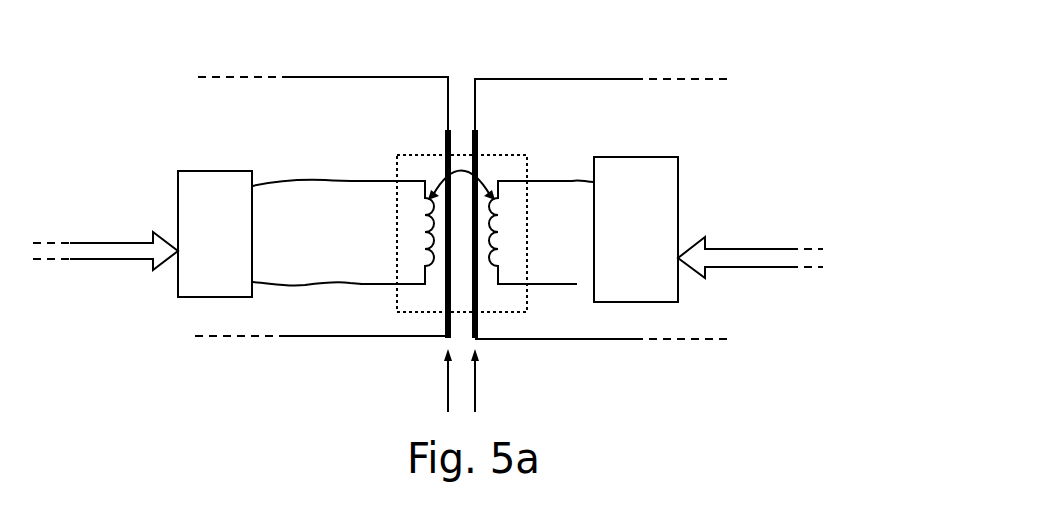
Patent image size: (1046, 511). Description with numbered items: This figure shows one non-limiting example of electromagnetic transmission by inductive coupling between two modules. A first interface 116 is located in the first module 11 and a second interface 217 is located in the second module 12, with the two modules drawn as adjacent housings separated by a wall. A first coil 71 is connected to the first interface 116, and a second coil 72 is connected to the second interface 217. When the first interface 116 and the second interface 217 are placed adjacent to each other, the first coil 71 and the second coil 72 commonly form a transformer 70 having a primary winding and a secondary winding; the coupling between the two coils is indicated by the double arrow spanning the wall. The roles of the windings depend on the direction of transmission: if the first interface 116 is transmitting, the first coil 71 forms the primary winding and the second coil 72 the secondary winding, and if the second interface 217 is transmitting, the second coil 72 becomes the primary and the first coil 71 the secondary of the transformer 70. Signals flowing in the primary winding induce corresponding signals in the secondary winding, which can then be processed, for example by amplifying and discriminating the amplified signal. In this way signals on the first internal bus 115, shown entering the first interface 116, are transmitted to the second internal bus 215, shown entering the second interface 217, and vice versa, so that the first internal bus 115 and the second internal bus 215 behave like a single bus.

The first module 11 is at (336, 97).
The second module 12 is at (675, 102).
The transformer 70 is at (432, 300).
The first coil 71 is at (432, 255).
The second coil 72 is at (495, 258).
The first internal bus 115 is at (90, 250).
The first interface 116 is at (210, 210).
The second internal bus 215 is at (767, 264).
The second interface 217 is at (665, 212).